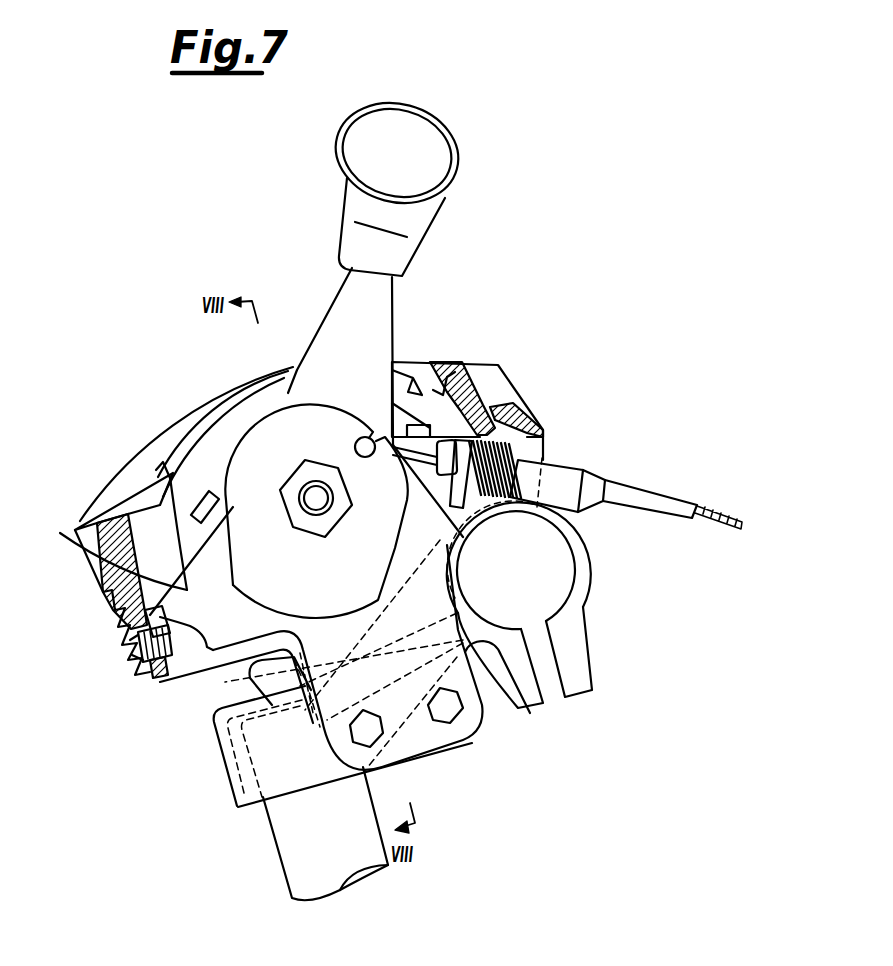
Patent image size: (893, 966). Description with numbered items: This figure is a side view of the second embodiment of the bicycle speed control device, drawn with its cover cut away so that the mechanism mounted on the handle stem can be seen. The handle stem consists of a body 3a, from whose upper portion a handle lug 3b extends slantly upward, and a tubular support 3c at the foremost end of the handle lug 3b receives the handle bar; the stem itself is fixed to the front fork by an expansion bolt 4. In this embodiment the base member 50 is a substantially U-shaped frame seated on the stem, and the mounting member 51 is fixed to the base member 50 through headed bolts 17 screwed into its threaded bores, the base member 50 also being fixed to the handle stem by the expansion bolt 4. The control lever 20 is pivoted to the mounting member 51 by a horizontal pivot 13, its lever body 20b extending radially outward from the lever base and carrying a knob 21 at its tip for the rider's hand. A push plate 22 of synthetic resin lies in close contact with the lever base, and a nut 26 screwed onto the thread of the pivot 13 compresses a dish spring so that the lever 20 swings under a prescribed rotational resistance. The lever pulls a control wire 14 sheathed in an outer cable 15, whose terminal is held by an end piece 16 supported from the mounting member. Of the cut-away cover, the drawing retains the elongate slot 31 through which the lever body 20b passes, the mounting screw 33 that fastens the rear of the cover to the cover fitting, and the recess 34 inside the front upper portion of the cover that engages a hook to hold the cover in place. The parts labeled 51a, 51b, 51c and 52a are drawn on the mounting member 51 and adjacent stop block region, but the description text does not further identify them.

The body 3a is at (283, 837).
The handle lug 3b is at (411, 697).
The support 3c is at (592, 585).
The expansion bolt 4 is at (248, 688).
The pivot 13 is at (297, 478).
The control wire 14 is at (712, 512).
The outer cable 15 is at (642, 490).
The end piece 16 is at (560, 473).
The headed bolts 17 is at (453, 714).
The control lever 20 is at (386, 303).
The lever body 20b is at (380, 333).
The knob 21 is at (418, 222).
The push plate 22 is at (253, 447).
The nut 26 is at (315, 465).
The slot 31 is at (170, 460).
The mounting screw 33 is at (130, 665).
The recess 34 is at (463, 362).
The base member 50 is at (228, 780).
The mounting member 51 is at (160, 503).
The detent block 51a is at (85, 553).
The detent rod 51b is at (537, 423).
The detent lower portion 51c is at (150, 680).
The stop insert 52a is at (470, 383).